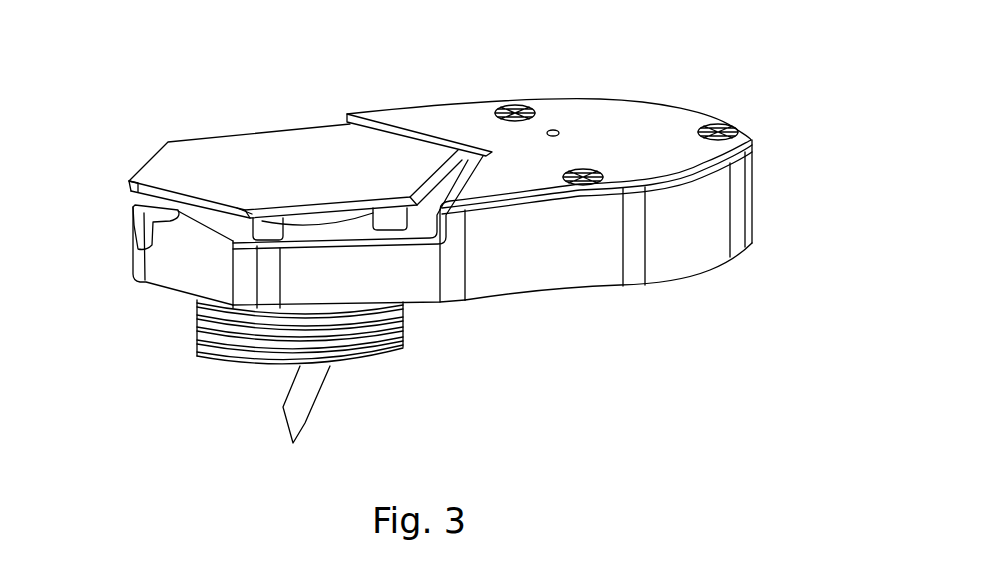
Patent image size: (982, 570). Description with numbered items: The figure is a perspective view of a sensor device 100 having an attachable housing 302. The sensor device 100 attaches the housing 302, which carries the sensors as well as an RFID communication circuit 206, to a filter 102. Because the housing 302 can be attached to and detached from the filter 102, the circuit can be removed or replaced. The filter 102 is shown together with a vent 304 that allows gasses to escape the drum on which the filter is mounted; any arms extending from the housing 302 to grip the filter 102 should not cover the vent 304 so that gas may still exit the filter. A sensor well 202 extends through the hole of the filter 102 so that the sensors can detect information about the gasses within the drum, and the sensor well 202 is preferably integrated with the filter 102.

The sensor device 100 is at (142, 160).
The filter 102 is at (255, 163).
The sensor well 202 is at (305, 423).
The RFID communication circuit 206 is at (663, 258).
The attachable housing 302 is at (600, 108).
The vent 304 is at (133, 215).